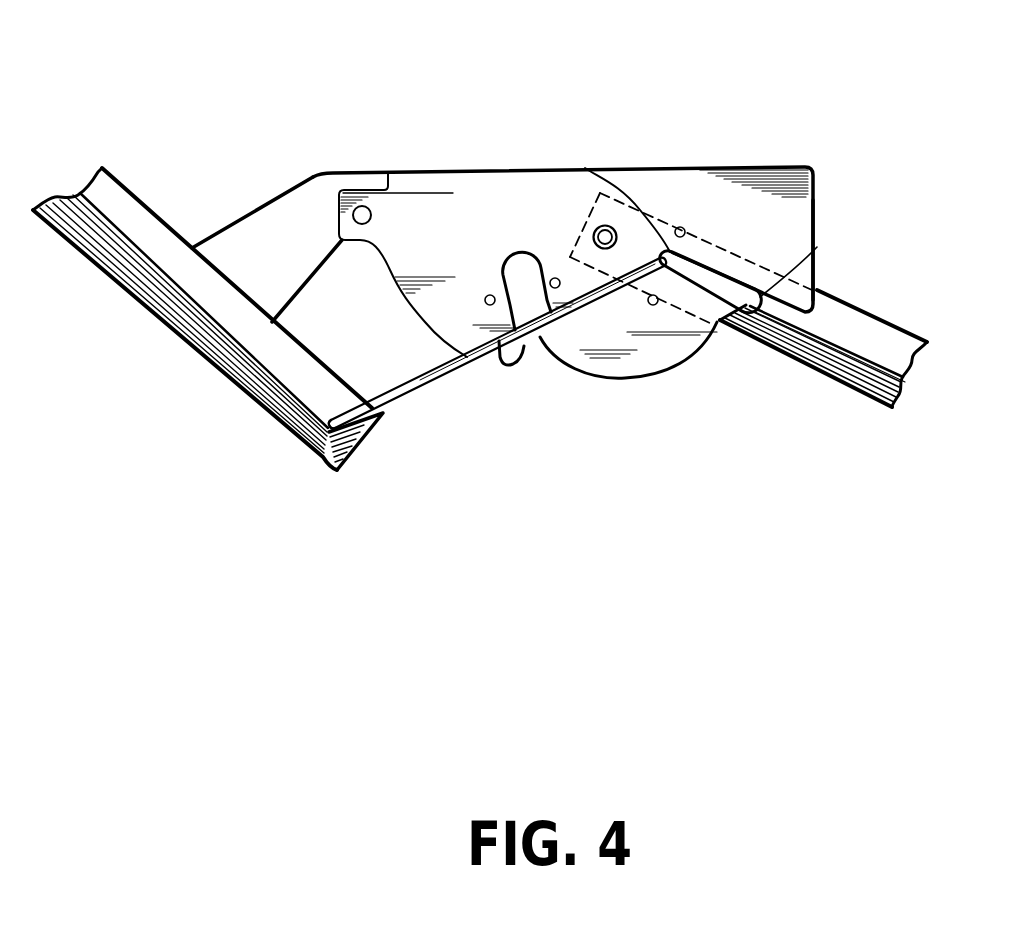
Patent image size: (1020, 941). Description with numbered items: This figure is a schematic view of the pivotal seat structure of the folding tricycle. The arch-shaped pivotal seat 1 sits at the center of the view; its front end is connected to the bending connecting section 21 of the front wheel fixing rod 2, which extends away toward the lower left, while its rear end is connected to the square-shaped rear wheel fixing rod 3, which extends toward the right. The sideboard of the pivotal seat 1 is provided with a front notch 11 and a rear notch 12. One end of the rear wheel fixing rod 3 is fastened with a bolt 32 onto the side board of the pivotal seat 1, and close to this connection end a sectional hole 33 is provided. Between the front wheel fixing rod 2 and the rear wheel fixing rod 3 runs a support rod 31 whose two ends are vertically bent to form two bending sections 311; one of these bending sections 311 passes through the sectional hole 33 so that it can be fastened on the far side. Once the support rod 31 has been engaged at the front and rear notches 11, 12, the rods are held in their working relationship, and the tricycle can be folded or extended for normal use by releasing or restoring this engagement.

The pivotal seat 1 is at (592, 168).
The front notch 11 is at (520, 277).
The rear notch 12 is at (826, 237).
The front wheel fixing rod 2 is at (215, 370).
The bending connecting section 21 is at (254, 208).
The rear wheel fixing rod 3 is at (869, 314).
The support rod 31 is at (540, 352).
The bending section 311 is at (325, 468).
The bolt 32 is at (626, 195).
The sectional hole 33 is at (729, 338).